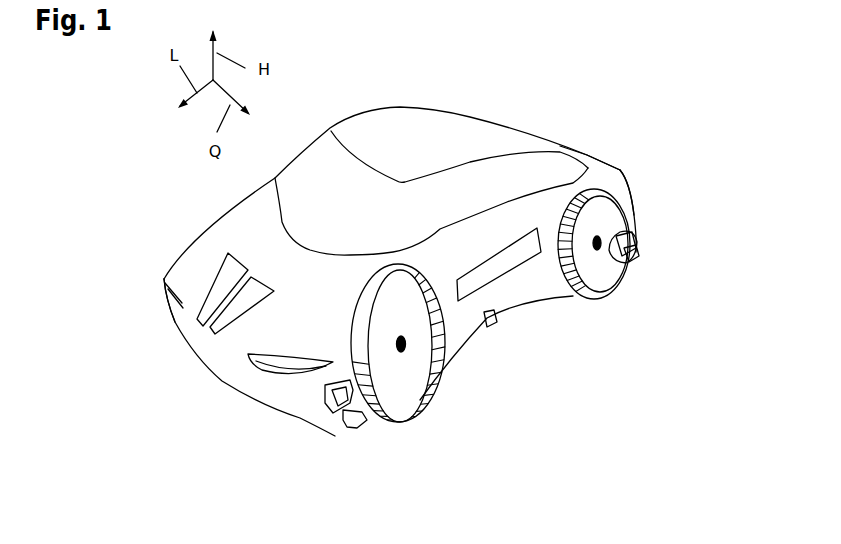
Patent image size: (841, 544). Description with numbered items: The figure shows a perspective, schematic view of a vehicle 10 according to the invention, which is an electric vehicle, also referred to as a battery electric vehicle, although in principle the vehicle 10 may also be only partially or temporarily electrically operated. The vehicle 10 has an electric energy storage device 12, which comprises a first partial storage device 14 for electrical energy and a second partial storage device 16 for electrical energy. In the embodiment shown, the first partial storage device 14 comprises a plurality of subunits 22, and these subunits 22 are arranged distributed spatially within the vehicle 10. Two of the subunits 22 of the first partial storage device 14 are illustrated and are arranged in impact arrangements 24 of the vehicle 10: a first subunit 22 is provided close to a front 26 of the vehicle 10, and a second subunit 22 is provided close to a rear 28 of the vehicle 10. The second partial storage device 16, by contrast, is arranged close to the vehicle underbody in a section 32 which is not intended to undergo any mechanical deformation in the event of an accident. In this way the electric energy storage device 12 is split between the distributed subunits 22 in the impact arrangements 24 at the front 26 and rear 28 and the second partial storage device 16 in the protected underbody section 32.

The vehicle 10 is at (115, 120).
The electric energy storage device 12 is at (667, 218).
The first partial storage device 14 is at (637, 242).
The second partial storage device 16 is at (507, 257).
The subunit 22 is at (637, 209).
The impact arrangement 24 is at (638, 256).
The front 26 is at (158, 385).
The rear 28 is at (612, 130).
The section 32 is at (495, 316).